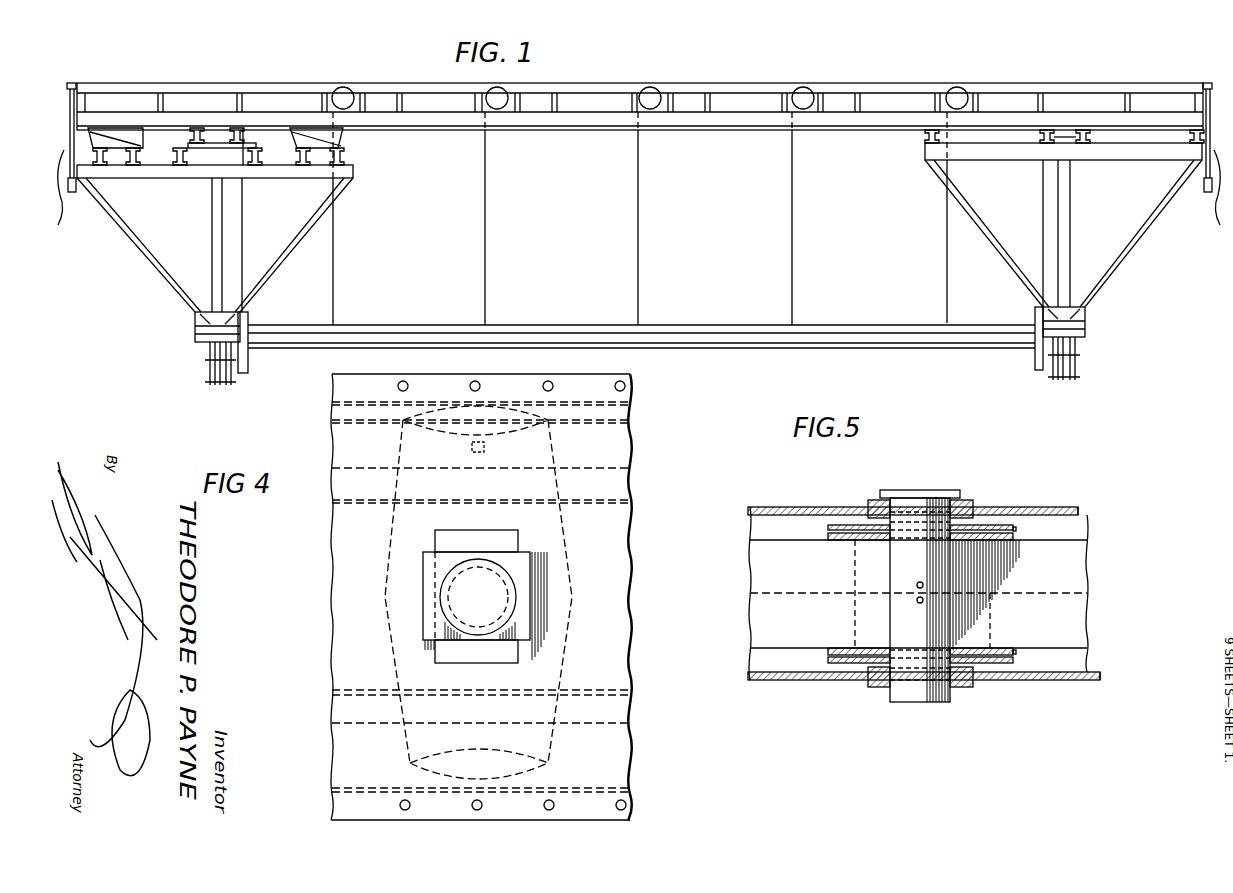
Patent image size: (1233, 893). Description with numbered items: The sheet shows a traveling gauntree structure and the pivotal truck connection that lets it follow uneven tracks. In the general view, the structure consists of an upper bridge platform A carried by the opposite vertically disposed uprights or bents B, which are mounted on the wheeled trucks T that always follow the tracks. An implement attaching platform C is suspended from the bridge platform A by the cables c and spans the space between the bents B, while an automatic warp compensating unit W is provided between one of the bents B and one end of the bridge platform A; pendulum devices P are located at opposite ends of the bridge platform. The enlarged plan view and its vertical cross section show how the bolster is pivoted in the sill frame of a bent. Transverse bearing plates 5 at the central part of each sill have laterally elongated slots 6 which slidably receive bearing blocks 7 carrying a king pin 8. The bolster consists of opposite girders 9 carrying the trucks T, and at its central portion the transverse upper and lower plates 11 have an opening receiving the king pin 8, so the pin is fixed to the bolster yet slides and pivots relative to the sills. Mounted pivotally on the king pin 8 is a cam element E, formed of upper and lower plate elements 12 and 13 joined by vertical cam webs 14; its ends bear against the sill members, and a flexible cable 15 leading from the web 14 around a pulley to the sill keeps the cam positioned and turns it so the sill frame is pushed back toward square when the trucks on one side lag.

In FIG. 1, the upper bridge platform A is at (690, 122).
In FIG. 1, the bents B is at (639, 258).
In FIG. 1, the implement attaching platform C is at (706, 344).
In FIG. 1, the pendulum device P is at (632, 158).
In FIG. 1, the wheeled trucks T is at (207, 356).
In FIG. 1, the automatic warp compensating unit W is at (646, 147).
In FIG. 1, the cables c is at (488, 270).
In FIG. 4, the transverse bearing plates 5 is at (317, 590).
In FIG. 5, the transverse bearing plates 5 is at (800, 510).
In FIG. 4, the laterally elongated slots 6 is at (478, 376).
In FIG. 5, the laterally elongated slots 6 is at (868, 682).
In FIG. 4, the bearing blocks 7 is at (508, 568).
In FIG. 5, the bearing blocks 7 is at (880, 505).
In FIG. 4, the king pin 8 is at (495, 592).
In FIG. 5, the king pin 8 is at (920, 495).
In FIG. 4, the girders 9 is at (585, 500).
In FIG. 5, the girders 9 is at (918, 593).
In FIG. 5, the upper and lower plates 11 is at (965, 540).
In FIG. 5, the upper plate element 12 is at (828, 527).
In FIG. 5, the lower plate element 13 is at (833, 662).
In FIG. 4, the vertical cam webs 14 is at (520, 408).
In FIG. 4, the flexible cable 15 is at (618, 426).
In FIG. 5, the flexible cable 15 is at (1065, 586).
In FIG. 4, the cam element E is at (410, 742).